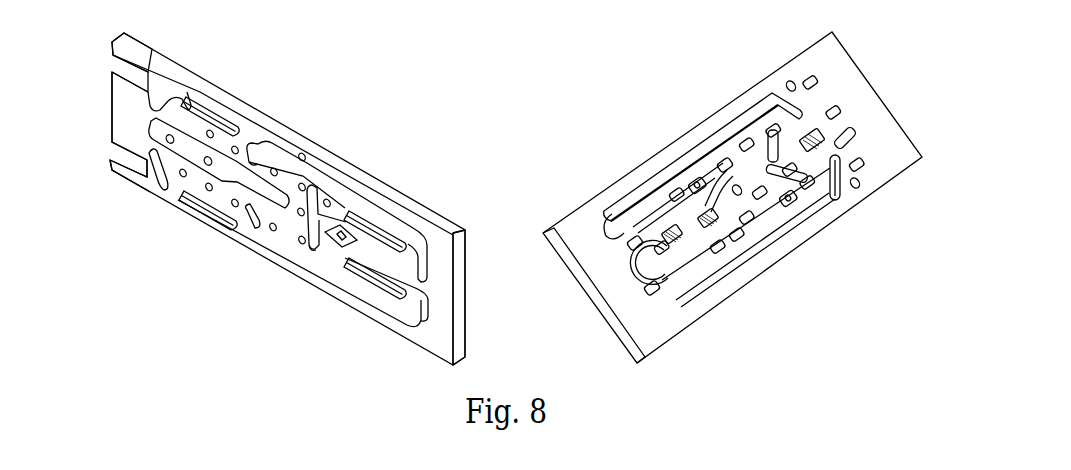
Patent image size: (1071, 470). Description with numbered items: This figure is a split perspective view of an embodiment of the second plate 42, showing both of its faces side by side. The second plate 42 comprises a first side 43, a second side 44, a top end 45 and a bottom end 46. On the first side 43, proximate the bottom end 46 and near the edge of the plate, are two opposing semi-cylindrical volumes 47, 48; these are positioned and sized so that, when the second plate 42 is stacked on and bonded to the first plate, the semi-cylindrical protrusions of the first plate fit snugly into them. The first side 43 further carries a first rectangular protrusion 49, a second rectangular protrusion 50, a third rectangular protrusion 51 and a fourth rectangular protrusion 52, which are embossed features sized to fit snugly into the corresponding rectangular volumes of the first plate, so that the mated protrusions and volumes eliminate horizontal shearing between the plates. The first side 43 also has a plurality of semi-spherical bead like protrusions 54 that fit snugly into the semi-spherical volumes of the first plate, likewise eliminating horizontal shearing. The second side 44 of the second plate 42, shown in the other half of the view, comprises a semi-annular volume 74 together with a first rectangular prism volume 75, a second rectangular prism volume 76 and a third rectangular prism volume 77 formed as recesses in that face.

The second plate 42 is at (549, 100).
The first side 43 is at (422, 336).
The second side 44 is at (890, 175).
The top end 45 is at (467, 305).
The bottom end 46 is at (110, 107).
The semi-cylindrical volume 47 is at (140, 67).
The semi-cylindrical volume 48 is at (132, 162).
The first rectangular protrusion 49 is at (229, 125).
The second rectangular protrusion 50 is at (202, 214).
The third rectangular protrusion 51 is at (388, 240).
The fourth rectangular protrusion 52 is at (382, 293).
The semi-spherical bead like protrusions 54 is at (325, 255).
The semi-annular volume 74 is at (653, 300).
The first rectangular prism volume 75 is at (677, 247).
The second rectangular prism volume 76 is at (713, 222).
The third rectangular prism volume 77 is at (828, 130).